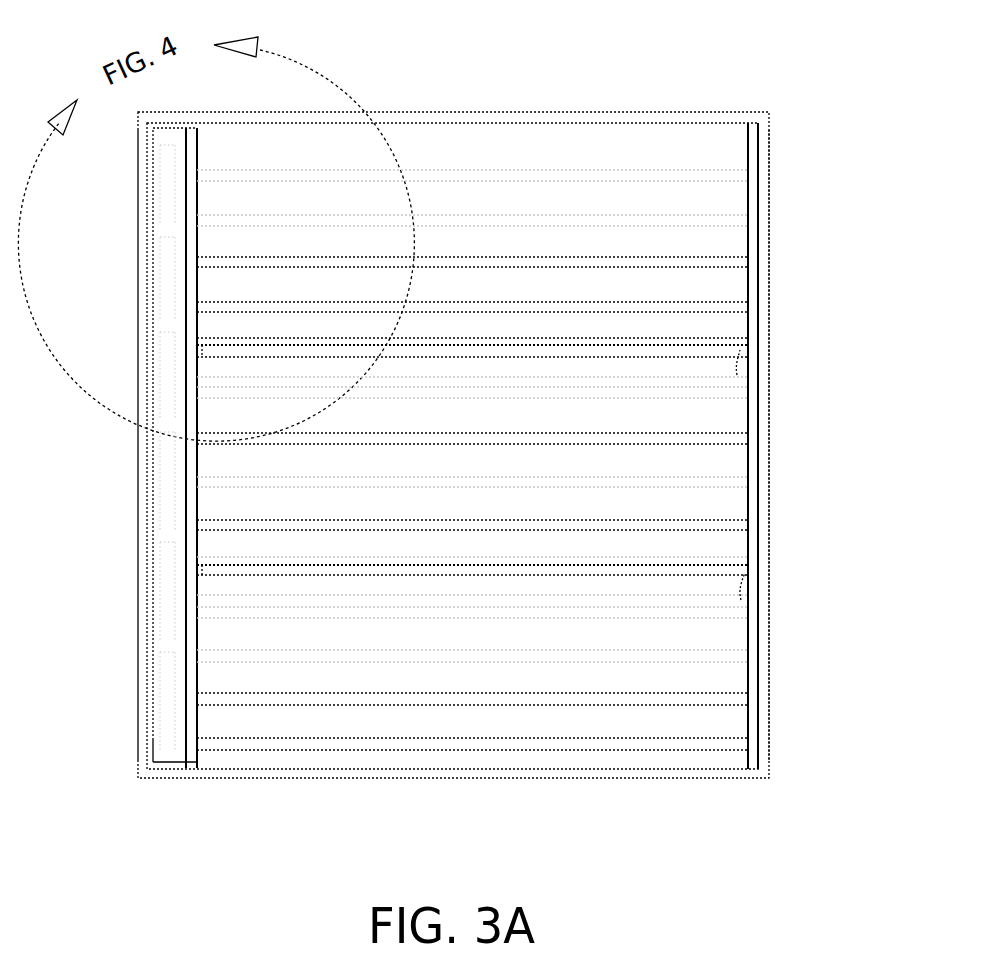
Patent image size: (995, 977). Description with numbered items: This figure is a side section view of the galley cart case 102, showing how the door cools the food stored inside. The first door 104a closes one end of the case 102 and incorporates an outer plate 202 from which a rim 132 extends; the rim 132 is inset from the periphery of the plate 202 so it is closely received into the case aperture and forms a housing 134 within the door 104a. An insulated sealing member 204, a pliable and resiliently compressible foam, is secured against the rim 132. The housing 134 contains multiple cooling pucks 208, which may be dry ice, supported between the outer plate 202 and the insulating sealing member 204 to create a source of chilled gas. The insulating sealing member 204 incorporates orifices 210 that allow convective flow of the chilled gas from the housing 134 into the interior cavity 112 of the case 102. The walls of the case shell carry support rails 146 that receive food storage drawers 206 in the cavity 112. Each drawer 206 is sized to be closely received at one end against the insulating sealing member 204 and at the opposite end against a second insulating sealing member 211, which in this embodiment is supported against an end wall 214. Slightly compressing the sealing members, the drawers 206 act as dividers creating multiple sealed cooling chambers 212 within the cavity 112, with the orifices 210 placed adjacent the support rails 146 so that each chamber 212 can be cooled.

The case 102 is at (560, 112).
The first door 104a is at (137, 190).
The interior cavity 112 is at (618, 240).
The rim 132 is at (160, 762).
The housing 134 is at (167, 338).
The support rails 146 is at (675, 262).
The outer plate 202 is at (137, 452).
The insulated sealing member 204 is at (195, 717).
The food storage drawers 206 is at (698, 368).
The cooling pucks 208 is at (172, 598).
The orifices 210 is at (197, 165).
The second insulating sealing member 211 is at (755, 162).
The cooling chambers 212 is at (387, 205).
The end wall 214 is at (763, 228).